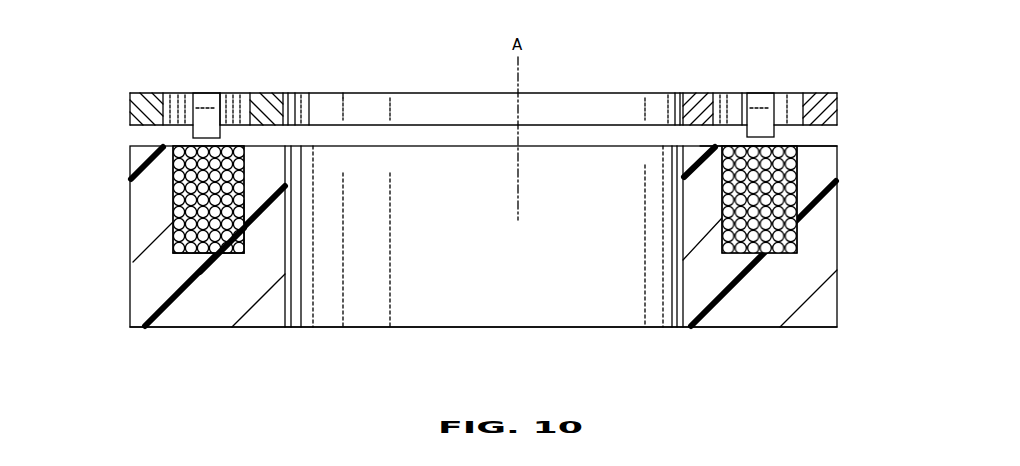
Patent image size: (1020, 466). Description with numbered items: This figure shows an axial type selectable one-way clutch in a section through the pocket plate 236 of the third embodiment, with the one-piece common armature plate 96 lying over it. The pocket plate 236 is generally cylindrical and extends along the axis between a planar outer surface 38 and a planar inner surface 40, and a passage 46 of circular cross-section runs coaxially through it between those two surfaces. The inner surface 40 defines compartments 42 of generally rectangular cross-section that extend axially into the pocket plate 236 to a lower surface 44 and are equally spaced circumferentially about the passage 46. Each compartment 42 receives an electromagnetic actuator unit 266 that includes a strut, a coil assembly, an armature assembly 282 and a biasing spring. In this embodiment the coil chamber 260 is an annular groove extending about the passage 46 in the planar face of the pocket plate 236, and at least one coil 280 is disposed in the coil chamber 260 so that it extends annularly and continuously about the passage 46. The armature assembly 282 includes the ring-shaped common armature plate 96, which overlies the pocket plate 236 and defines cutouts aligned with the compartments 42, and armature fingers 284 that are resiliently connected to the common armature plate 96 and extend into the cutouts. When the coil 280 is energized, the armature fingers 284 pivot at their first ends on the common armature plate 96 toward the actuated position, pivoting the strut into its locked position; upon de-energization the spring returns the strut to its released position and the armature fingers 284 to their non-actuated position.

The planar outer surface 38 is at (757, 327).
The planar inner surface 40 is at (818, 146).
The compartment 42 is at (232, 260).
The lower surface 44 is at (263, 146).
The passage 46 is at (683, 285).
The common armature plate 96 is at (142, 93).
The pocket plate 236 is at (127, 250).
The coil chamber 260 is at (197, 254).
The electromagnetic actuator unit 266 is at (167, 202).
The coil 280 is at (240, 232).
The armature assembly 282 is at (281, 62).
The armature finger 284 is at (185, 104).